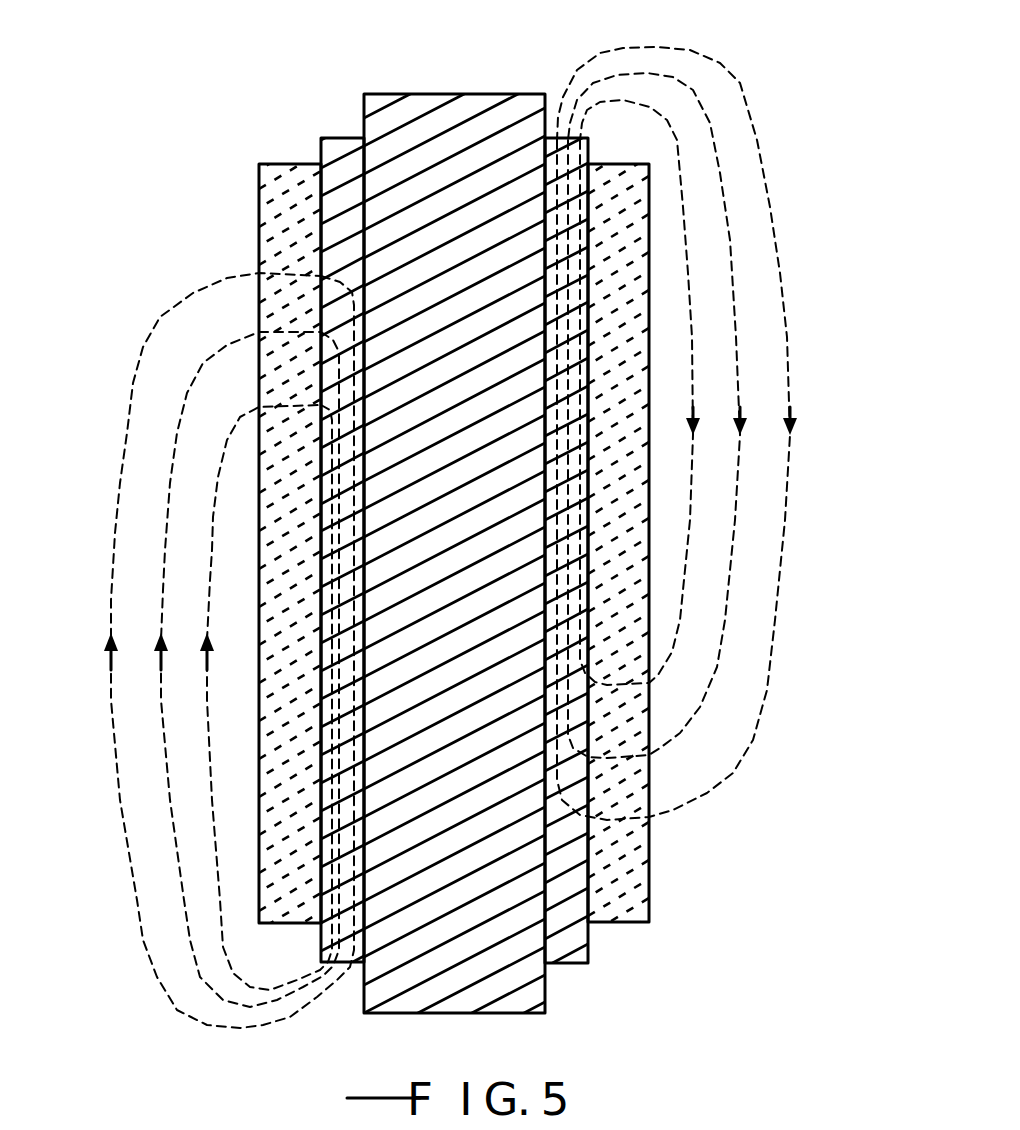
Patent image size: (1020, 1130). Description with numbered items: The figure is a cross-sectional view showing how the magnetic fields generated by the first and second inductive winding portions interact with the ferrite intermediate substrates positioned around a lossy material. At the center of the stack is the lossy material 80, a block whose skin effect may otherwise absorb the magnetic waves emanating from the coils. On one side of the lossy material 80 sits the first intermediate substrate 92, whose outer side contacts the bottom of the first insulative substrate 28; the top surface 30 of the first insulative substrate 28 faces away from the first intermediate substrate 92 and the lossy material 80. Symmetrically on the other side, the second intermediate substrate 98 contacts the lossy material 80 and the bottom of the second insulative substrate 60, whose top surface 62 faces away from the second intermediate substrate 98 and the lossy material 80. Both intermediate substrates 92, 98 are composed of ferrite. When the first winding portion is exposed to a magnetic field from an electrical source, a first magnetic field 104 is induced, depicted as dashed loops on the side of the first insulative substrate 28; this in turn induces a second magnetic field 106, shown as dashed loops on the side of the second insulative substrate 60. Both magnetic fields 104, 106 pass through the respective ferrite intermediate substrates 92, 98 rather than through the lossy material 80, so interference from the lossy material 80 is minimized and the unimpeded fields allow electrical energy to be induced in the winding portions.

The first insulative substrate 28 is at (277, 187).
The top surface of the first insulative substrate 30 is at (246, 233).
The second insulative substrate 60 is at (623, 922).
The top surface of the second insulative substrate 62 is at (662, 855).
The lossy material 80 is at (437, 113).
The first intermediate substrate 92 is at (347, 163).
The second intermediate substrate 98 is at (558, 947).
The first magnetic field 104 is at (115, 530).
The second magnetic field 106 is at (787, 338).